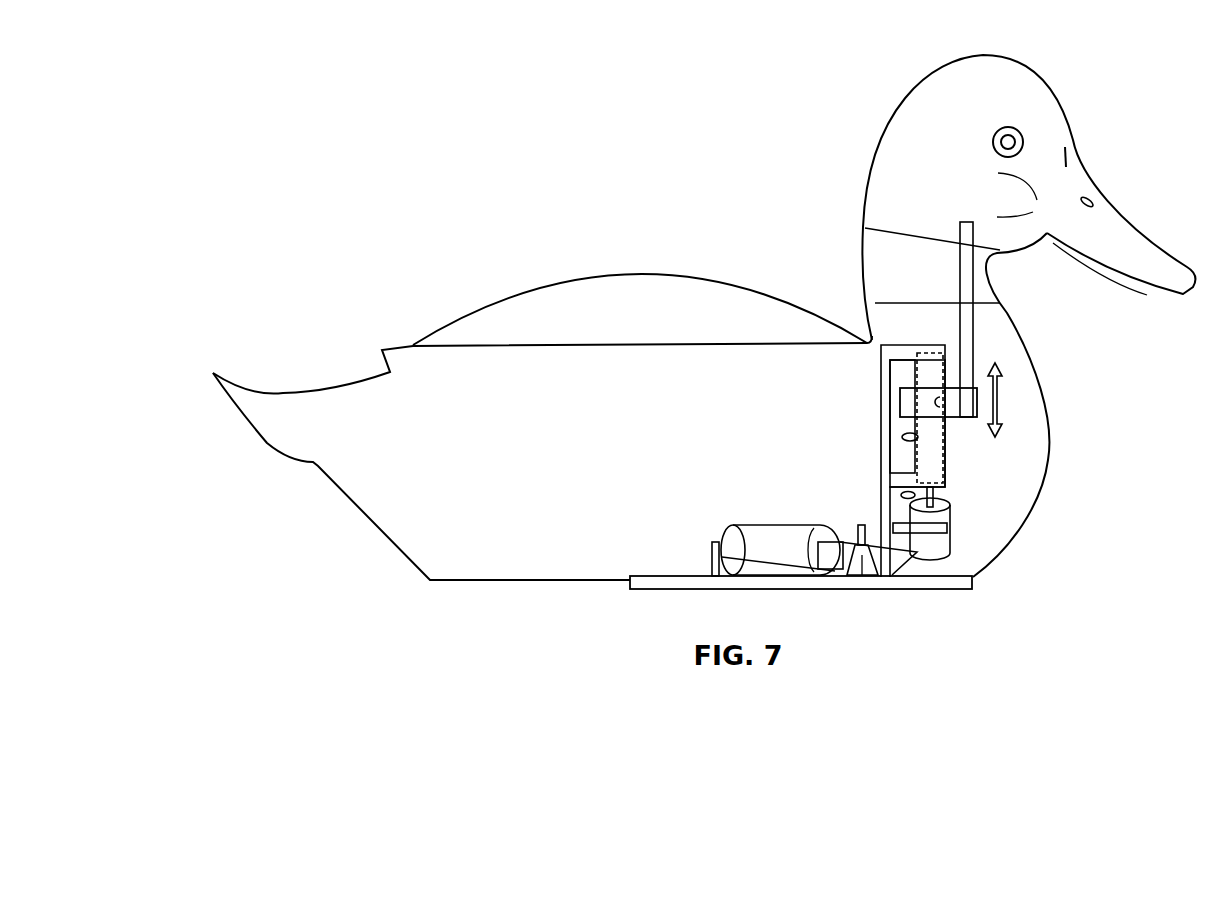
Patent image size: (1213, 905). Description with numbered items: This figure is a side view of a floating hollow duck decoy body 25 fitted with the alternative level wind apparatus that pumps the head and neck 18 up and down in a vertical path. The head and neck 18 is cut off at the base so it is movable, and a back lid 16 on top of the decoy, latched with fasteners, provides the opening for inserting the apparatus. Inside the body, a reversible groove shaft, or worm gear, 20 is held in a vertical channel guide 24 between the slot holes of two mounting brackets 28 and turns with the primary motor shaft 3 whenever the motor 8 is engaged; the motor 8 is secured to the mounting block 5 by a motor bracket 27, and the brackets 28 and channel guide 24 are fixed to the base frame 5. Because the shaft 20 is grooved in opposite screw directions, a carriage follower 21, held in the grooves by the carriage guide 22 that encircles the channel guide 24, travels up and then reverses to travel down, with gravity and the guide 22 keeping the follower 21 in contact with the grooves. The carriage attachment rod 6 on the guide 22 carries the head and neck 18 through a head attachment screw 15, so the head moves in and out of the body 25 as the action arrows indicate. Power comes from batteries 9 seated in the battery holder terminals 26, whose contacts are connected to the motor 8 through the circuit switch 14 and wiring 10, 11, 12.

The primary motor shaft 3 is at (950, 493).
The base frame and mounting block 5 is at (650, 575).
The carriage (pawl) attachment rod 6 is at (977, 380).
The motor 8 is at (970, 575).
The battery 9 is at (761, 560).
The circuit wiring 10 is at (857, 537).
The circuit wiring 11 is at (900, 577).
The circuit wiring 12 is at (731, 525).
The circuit switch 14 is at (862, 570).
The head attachment screw 15 is at (960, 220).
The back lid 16 is at (627, 320).
The head and neck 18 is at (970, 103).
The reversible groove shaft (worm gear) 20 is at (928, 452).
The carriage (pawl) follower 21 is at (900, 398).
The carriage (pawl) guide 22 is at (902, 437).
The channel guide 24 is at (902, 368).
The hollow decoy body 25 is at (470, 438).
The battery holder terminals 26 is at (712, 558).
The motor bracket 27 is at (950, 527).
The mounting brackets 28 is at (906, 345).